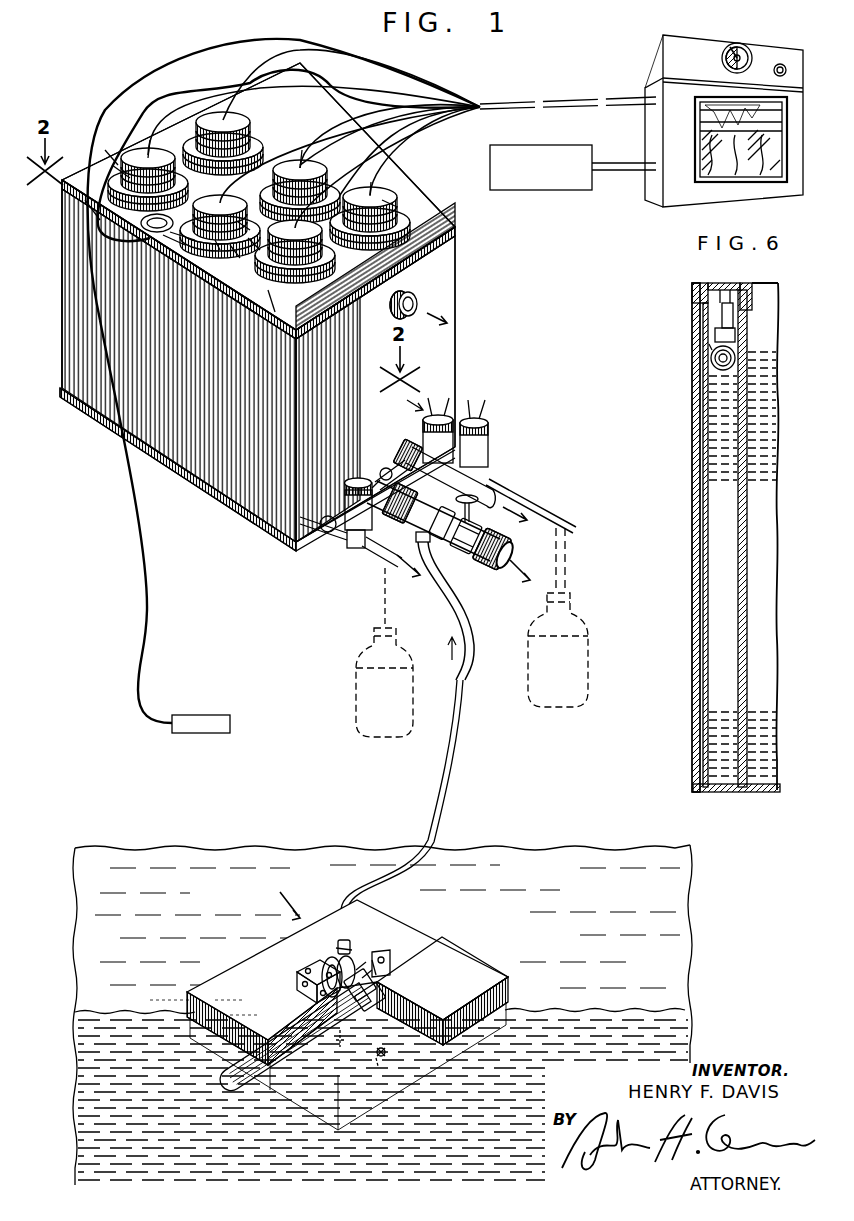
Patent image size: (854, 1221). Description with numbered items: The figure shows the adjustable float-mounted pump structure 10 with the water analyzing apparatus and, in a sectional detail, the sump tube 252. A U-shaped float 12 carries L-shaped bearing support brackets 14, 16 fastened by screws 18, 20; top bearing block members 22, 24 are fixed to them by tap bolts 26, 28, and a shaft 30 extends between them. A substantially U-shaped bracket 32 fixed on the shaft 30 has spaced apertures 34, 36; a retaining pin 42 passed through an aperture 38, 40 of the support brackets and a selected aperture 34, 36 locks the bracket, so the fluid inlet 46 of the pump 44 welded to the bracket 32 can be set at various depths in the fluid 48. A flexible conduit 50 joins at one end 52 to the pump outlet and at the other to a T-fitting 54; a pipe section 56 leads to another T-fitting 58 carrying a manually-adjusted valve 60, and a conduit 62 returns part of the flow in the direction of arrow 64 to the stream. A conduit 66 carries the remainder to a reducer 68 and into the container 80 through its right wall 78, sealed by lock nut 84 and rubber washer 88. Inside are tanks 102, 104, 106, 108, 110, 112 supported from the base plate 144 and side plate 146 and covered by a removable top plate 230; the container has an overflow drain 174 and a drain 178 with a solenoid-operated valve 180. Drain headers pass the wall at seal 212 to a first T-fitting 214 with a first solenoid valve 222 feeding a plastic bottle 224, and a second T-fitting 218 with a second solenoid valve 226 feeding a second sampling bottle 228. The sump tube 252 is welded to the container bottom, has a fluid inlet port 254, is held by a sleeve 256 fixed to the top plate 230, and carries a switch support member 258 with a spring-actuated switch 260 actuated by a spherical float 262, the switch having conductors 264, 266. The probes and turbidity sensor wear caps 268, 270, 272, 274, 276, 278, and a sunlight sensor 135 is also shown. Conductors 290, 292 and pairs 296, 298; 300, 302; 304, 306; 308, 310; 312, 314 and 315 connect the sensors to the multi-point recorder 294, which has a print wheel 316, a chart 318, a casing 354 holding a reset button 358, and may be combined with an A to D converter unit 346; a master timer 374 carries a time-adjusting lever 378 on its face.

In FIG. 1, the adjustable float-mounted pump structure 10 is at (281, 894).
In FIG. 1, the U-shaped float 12 is at (222, 990).
In FIG. 1, the L-shaped bearing support bracket 14 is at (307, 970).
In FIG. 1, the L-shaped bearing support bracket 16 is at (392, 967).
In FIG. 1, the screw 18 is at (297, 986).
In FIG. 1, the screw 20 is at (322, 998).
In FIG. 1, the top bearing block member 22 is at (323, 957).
In FIG. 1, the top bearing block member 24 is at (383, 978).
In FIG. 1, the tap bolt 26 is at (365, 962).
In FIG. 1, the tap bolt 28 is at (375, 972).
In FIG. 1, the shaft 30 is at (352, 950).
In FIG. 1, the substantially U-shaped bracket 32 is at (372, 966).
In FIG. 1, the aperture 34 is at (405, 985).
In FIG. 1, the aperture 36 is at (377, 1052).
In FIG. 1, the aperture 38 is at (370, 963).
In FIG. 1, the aperture 40 is at (340, 1062).
In FIG. 1, the retaining pin 42 is at (385, 990).
In FIG. 1, the pump 44 is at (428, 1122).
In FIG. 1, the fluid inlet 46 is at (377, 1060).
In FIG. 1, the fluid 48 is at (598, 1040).
In FIG. 1, the flexible conduit 50 is at (462, 720).
In FIG. 1, the conduit end 52 is at (335, 946).
In FIG. 1, the T-fitting 54 is at (400, 520).
In FIG. 1, the pipe section 56 is at (472, 496).
In FIG. 1, the T-fitting 58 is at (452, 580).
In FIG. 1, the manually-adjusted valve 60 is at (510, 500).
In FIG. 1, the conduit 62 is at (486, 570).
In FIG. 1, the arrow 64 is at (518, 584).
In FIG. 1, the conduit 66 is at (395, 520).
In FIG. 1, the reducer 68 is at (376, 480).
In FIG. 1, the right wall 78 is at (440, 345).
In FIG. 6, the rectangular-shaped container 80 is at (686, 576).
In FIG. 1, the lock nut 84 is at (383, 470).
In FIG. 1, the rubber washer 88 is at (395, 462).
In FIG. 1, the tank 102 is at (374, 262).
In FIG. 1, the tank 104 is at (293, 296).
In FIG. 1, the tank 106 is at (322, 178).
In FIG. 1, the tank 108 is at (214, 258).
In FIG. 1, the tank 110 is at (146, 157).
In FIG. 1, the tank 112 is at (92, 215).
In FIG. 1, the sunlight sensor 135 is at (206, 715).
In FIG. 1, the base plate 144 is at (200, 490).
In FIG. 1, the side plate 146 is at (78, 341).
In FIG. 6, the side plate 146 is at (696, 492).
In FIG. 1, the open overflow drain 174 is at (418, 296).
In FIG. 1, the drain 178 is at (406, 445).
In FIG. 1, the solenoid-operated valve 180 is at (438, 415).
In FIG. 1, the fluid-tight seal 212 is at (296, 548).
In FIG. 1, the first T-fitting 214 is at (472, 470).
In FIG. 1, the second T-fitting 218 is at (370, 548).
In FIG. 1, the first solenoid valve 222 is at (484, 420).
In FIG. 1, the plastic bottle 224 is at (585, 652).
In FIG. 1, the second solenoid valve 226 is at (352, 520).
In FIG. 1, the second sampling bottle 228 is at (360, 687).
In FIG. 1, the removable top plate 230 is at (456, 240).
In FIG. 6, the removable top plate 230 is at (770, 283).
In FIG. 6, the sump tube 252 is at (745, 540).
In FIG. 6, the fluid inlet port 254 is at (755, 748).
In FIG. 1, the sleeve 256 is at (138, 228).
In FIG. 6, the sleeve 256 is at (753, 300).
In FIG. 6, the switch support member 258 is at (726, 312).
In FIG. 6, the spring-actuated single-throw double pole switch 260 is at (722, 336).
In FIG. 6, the spherical float 262 is at (713, 362).
In FIG. 1, the electrical conductor 264 is at (183, 244).
In FIG. 6, the electrical conductor 264 is at (720, 290).
In FIG. 1, the electrical conductor 266 is at (192, 241).
In FIG. 6, the electrical conductor 266 is at (730, 290).
In FIG. 1, the cap 268 is at (412, 222).
In FIG. 1, the cap 270 is at (207, 252).
In FIG. 1, the cap 272 is at (305, 160).
In FIG. 1, the cap 274 is at (120, 163).
In FIG. 1, the cap 276 is at (196, 86).
In FIG. 1, the cap 278 is at (272, 312).
In FIG. 1, the electrical conductor 290 is at (300, 328).
In FIG. 1, the electrical conductor 292 is at (254, 247).
In FIG. 1, the multi-point recorder 294 is at (638, 84).
In FIG. 1, the electrical conductor 296 is at (376, 200).
In FIG. 1, the electrical conductor 298 is at (398, 205).
In FIG. 1, the electrical conductor 300 is at (200, 248).
In FIG. 1, the electrical conductor 302 is at (247, 240).
In FIG. 1, the electrical conductor 304 is at (293, 130).
In FIG. 1, the electrical conductor 306 is at (340, 130).
In FIG. 1, the electrical conductor 308 is at (147, 156).
In FIG. 1, the electrical conductor 310 is at (112, 152).
In FIG. 1, the electrical conductor 312 is at (220, 120).
In FIG. 1, the electrical conductor 314 is at (258, 92).
In FIG. 1, the electrical conductor 315 is at (143, 545).
In FIG. 1, the multicolored print wheel 316 is at (732, 113).
In FIG. 1, the chart 318 is at (716, 148).
In FIG. 1, the A to D converter unit 346 is at (532, 145).
In FIG. 1, the casing 354 is at (655, 182).
In FIG. 1, the manually-adjusted reset button 358 is at (783, 64).
In FIG. 1, the master timer 374 is at (746, 46).
In FIG. 1, the time-adjusting lever 378 is at (729, 45).